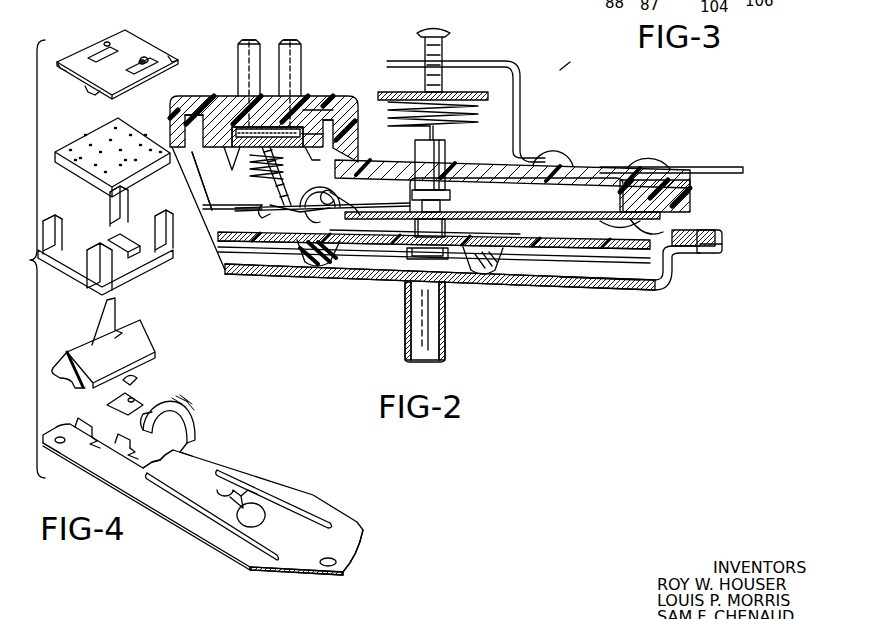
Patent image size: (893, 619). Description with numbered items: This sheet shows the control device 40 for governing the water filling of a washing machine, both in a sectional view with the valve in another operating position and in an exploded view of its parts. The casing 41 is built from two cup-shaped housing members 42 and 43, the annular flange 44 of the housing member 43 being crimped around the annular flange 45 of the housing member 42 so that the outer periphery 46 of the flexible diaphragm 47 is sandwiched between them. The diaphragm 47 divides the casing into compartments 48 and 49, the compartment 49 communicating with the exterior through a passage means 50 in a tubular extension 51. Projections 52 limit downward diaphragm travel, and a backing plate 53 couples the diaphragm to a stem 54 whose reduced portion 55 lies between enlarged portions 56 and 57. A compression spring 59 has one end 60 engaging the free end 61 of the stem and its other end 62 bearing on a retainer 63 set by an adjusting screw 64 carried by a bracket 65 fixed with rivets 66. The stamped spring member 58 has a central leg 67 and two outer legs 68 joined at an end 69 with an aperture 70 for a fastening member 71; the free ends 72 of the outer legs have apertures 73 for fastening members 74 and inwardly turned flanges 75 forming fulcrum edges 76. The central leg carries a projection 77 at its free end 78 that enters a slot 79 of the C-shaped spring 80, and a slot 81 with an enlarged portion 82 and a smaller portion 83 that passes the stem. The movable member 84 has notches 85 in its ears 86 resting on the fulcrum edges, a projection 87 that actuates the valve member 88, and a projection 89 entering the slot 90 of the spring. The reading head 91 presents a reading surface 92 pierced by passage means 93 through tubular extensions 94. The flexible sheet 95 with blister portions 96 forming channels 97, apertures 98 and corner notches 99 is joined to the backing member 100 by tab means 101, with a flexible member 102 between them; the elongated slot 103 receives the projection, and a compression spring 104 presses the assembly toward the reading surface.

In FIG. 2, the control device 40 is at (566, 64).
In FIG. 2, the casing 41 is at (194, 96).
In FIG. 2, the housing member 42 is at (682, 188).
In FIG. 2, the housing member 43 is at (645, 292).
In FIG. 2, the annular flange 44 is at (724, 242).
In FIG. 2, the annular flange 45 is at (705, 232).
In FIG. 2, the outer periphery 46 is at (708, 254).
In FIG. 2, the flexible diaphragm 47 is at (540, 266).
In FIG. 2, the compartment 48 is at (578, 178).
In FIG. 2, the compartment 49 is at (600, 284).
In FIG. 2, the passage means 50 is at (425, 352).
In FIG. 2, the tubular extension 51 is at (447, 336).
In FIG. 2, the projections 52 is at (317, 268).
In FIG. 2, the backing plate 53 is at (500, 238).
In FIG. 2, the stem 54 is at (415, 183).
In FIG. 2, the reduced portion 55 is at (445, 206).
In FIG. 2, the enlarged portion 56 is at (447, 195).
In FIG. 2, the enlarged portion 57 is at (446, 228).
In FIG. 2, the spring member 58 is at (512, 205).
In FIG. 4, the spring member 58 is at (313, 497).
In FIG. 2, the compression spring 59 is at (470, 114).
In FIG. 2, the end of spring 60 is at (436, 132).
In FIG. 2, the free end of stem 61 is at (442, 147).
In FIG. 2, the other end of spring 62 is at (340, 118).
In FIG. 2, the retainer 63 is at (455, 93).
In FIG. 2, the adjusting screw 64 is at (425, 73).
In FIG. 2, the bracket 65 is at (492, 61).
In FIG. 2, the rivets 66 is at (552, 152).
In FIG. 2, the central leg 67 is at (370, 214).
In FIG. 4, the central leg 67 is at (215, 470).
In FIG. 2, the outer legs 68 is at (337, 214).
In FIG. 4, the outer legs 68 is at (248, 462).
In FIG. 2, the end of spring member 69 is at (598, 226).
In FIG. 4, the end of spring member 69 is at (360, 533).
In FIG. 4, the aperture 70 is at (337, 557).
In FIG. 2, the fastening member 71 is at (640, 230).
In FIG. 2, the free ends 72 is at (220, 196).
In FIG. 4, the free ends 72 is at (53, 450).
In FIG. 4, the apertures 73 is at (110, 404).
In FIG. 2, the fastening members 74 is at (235, 208).
In FIG. 4, the inwardly turned flanges 75 is at (102, 428).
In FIG. 4, the fulcrum edges 76 is at (95, 440).
In FIG. 2, the projection 77 is at (334, 190).
In FIG. 4, the projection 77 is at (160, 458).
In FIG. 4, the free end of central leg 78 is at (148, 464).
In FIG. 4, the slot 79 is at (192, 428).
In FIG. 2, the C-shaped spring 80 is at (318, 188).
In FIG. 4, the C-shaped spring 80 is at (190, 405).
In FIG. 4, the slot 81 is at (262, 497).
In FIG. 4, the enlarged portion 82 is at (268, 498).
In FIG. 4, the smaller portion 83 is at (232, 488).
In FIG. 2, the movable member 84 is at (285, 210).
In FIG. 4, the movable member 84 is at (148, 340).
In FIG. 2, the notches 85 is at (266, 213).
In FIG. 4, the notches 85 is at (55, 370).
In FIG. 2, the ears 86 is at (272, 195).
In FIG. 4, the ears 86 is at (67, 350).
In FIG. 2, the projection 87 is at (310, 152).
In FIG. 4, the projection 87 is at (115, 318).
In FIG. 2, the valve member 88 is at (232, 162).
In FIG. 2, the projection 89 is at (310, 216).
In FIG. 4, the projection 89 is at (140, 378).
In FIG. 4, the slot 90 is at (150, 412).
In FIG. 2, the reading head 91 is at (290, 110).
In FIG. 2, the reading surface 92 is at (225, 127).
In FIG. 2, the passage means 93 is at (243, 48).
In FIG. 2, the tubular extensions 94 is at (250, 42).
In FIG. 2, the flexible sheet 95 is at (312, 115).
In FIG. 4, the flexible sheet 95 is at (140, 40).
In FIG. 4, the blister portions 96 is at (100, 48).
In FIG. 4, the channels 97 is at (110, 40).
In FIG. 4, the apertures 98 is at (147, 55).
In FIG. 4, the notches 99 is at (168, 58).
In FIG. 2, the backing member 100 is at (196, 140).
In FIG. 4, the backing member 100 is at (145, 272).
In FIG. 4, the tab means 101 is at (50, 215).
In FIG. 2, the flexible member 102 is at (340, 138).
In FIG. 4, the flexible member 102 is at (125, 128).
In FIG. 4, the elongated slot 103 is at (120, 238).
In FIG. 2, the compression spring 104 is at (262, 170).